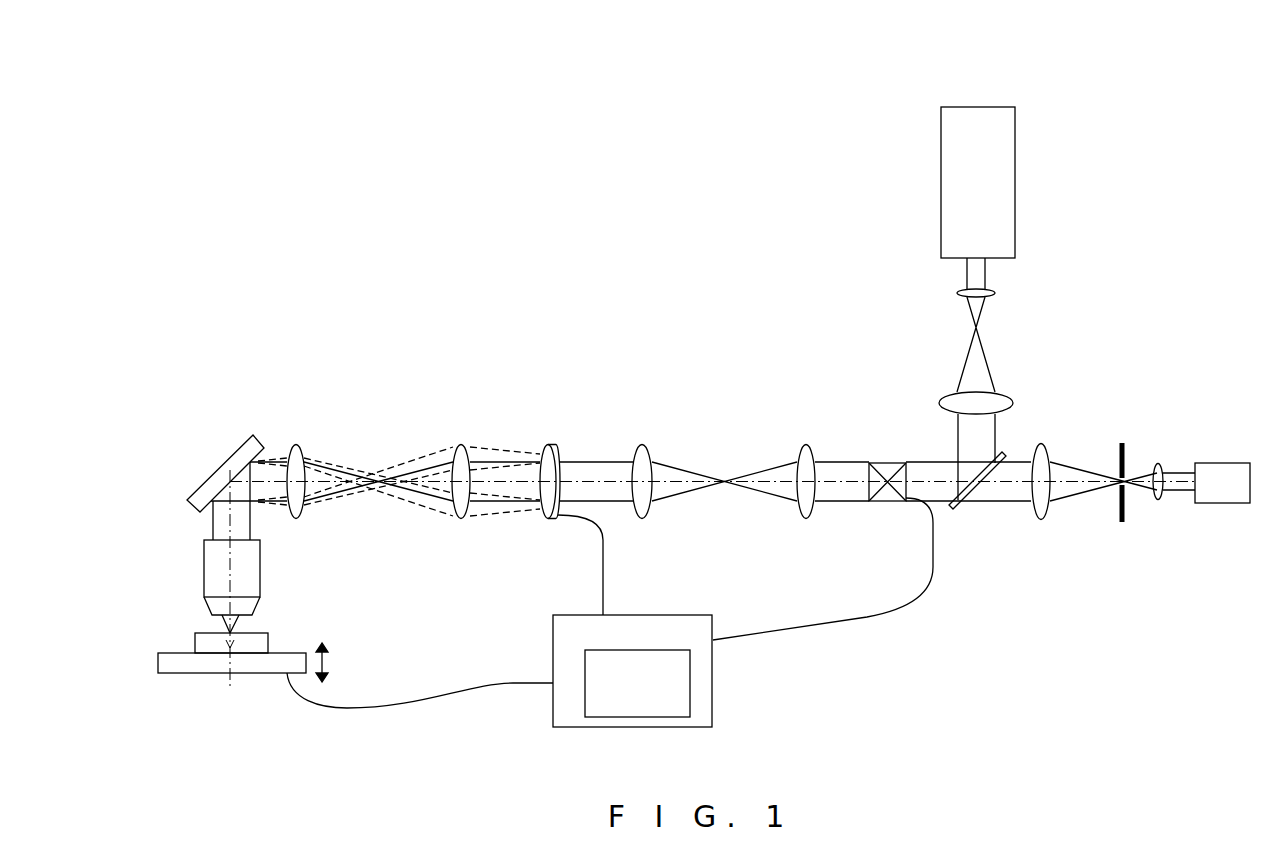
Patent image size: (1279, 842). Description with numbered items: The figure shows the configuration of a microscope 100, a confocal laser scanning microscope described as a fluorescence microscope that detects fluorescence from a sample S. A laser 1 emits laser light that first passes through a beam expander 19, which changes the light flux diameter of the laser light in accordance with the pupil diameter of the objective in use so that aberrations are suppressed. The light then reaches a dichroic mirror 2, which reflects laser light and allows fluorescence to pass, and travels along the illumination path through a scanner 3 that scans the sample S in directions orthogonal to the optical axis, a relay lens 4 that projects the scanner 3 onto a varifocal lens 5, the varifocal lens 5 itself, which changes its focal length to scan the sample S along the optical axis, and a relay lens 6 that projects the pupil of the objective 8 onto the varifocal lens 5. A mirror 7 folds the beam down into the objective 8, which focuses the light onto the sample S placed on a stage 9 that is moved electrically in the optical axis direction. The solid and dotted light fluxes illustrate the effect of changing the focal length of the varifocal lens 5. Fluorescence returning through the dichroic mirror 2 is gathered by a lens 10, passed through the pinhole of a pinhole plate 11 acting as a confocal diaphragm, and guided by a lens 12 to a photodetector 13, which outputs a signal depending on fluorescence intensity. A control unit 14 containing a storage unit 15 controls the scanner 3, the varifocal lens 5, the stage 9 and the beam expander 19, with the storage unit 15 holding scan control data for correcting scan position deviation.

The microscope 100 is at (1165, 179).
The laser 1 is at (1015, 182).
The dichroic mirror 2 is at (980, 492).
The scanner 3 is at (887, 463).
The relay lens 4 is at (815, 521).
The varifocal lens 5 is at (555, 444).
The relay lens 6 is at (470, 521).
The mirror 7 is at (220, 461).
The objective 8 is at (204, 572).
The stage 9 is at (183, 653).
The sample S is at (278, 645).
The lens 10 is at (1043, 444).
The pinhole plate 11 is at (1125, 443).
The lens 12 is at (1160, 463).
The photodetector 13 is at (1222, 463).
The control unit 14 is at (665, 696).
The storage unit 15 is at (640, 717).
The beam expander 19 is at (1013, 278).